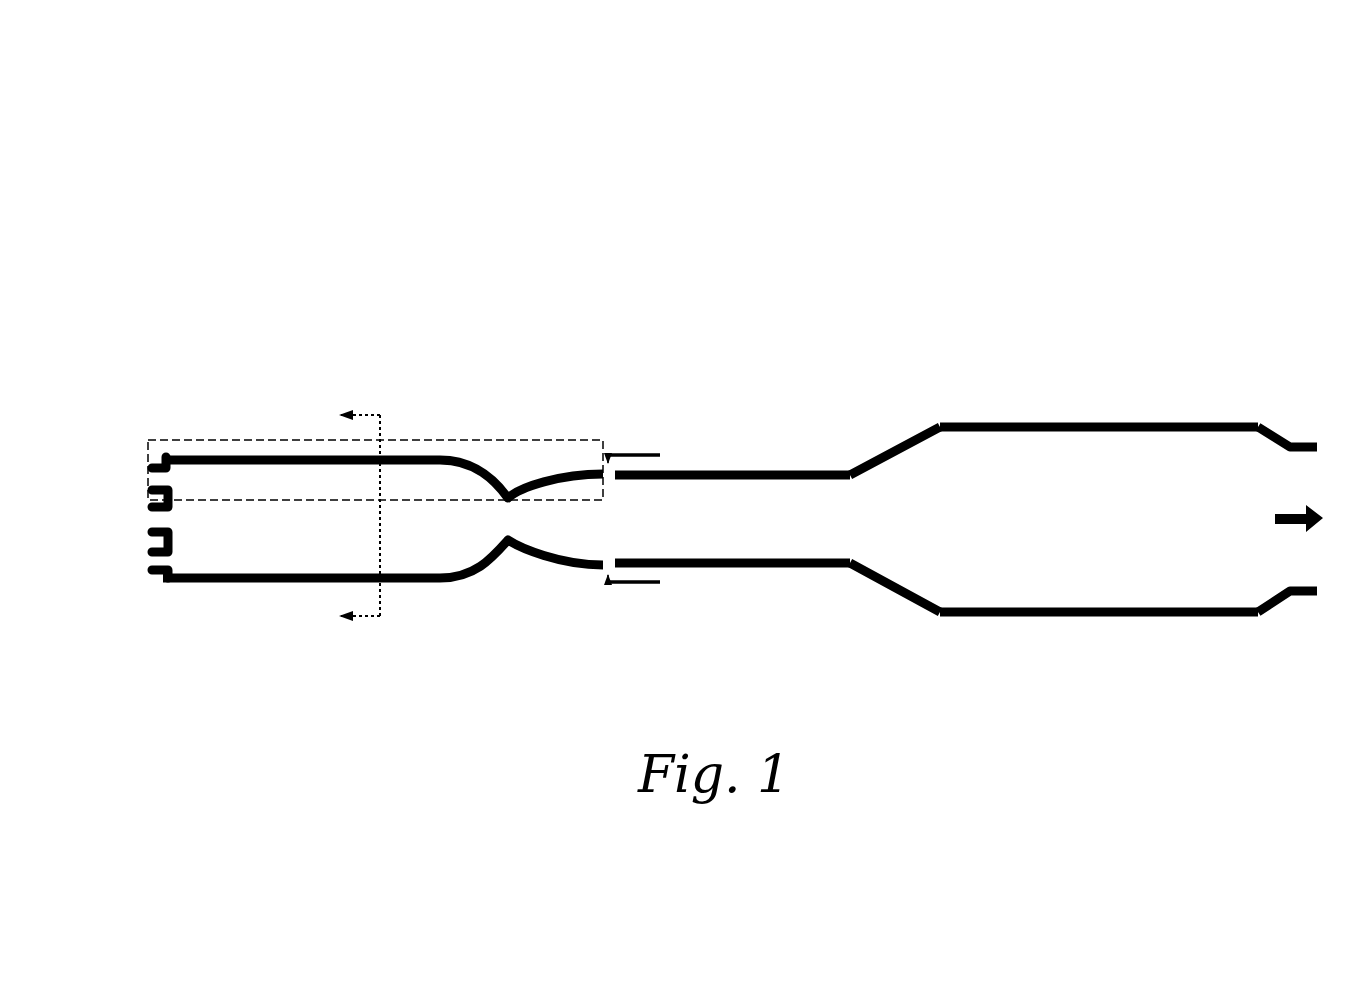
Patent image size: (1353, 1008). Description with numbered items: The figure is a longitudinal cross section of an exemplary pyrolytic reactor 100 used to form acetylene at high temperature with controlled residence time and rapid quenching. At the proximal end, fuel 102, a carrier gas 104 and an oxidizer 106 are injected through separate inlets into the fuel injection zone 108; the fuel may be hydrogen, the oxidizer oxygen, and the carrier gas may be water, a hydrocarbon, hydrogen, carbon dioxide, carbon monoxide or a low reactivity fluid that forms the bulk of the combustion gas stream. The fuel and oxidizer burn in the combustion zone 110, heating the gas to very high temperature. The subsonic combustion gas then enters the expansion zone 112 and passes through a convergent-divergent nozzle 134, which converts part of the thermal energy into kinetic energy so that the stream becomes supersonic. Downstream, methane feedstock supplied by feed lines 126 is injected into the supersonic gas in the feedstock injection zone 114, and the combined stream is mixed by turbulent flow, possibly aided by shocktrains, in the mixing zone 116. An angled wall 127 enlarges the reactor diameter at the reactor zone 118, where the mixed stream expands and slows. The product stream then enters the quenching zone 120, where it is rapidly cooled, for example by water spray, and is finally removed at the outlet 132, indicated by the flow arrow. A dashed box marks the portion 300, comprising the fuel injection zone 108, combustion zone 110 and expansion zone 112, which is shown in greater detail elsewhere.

The pyrolytic reactor 100 is at (1236, 183).
The fuel 102 is at (157, 478).
The carrier gas 104 is at (157, 520).
The oxidizer 106 is at (157, 560).
The fuel injection zone 108 is at (157, 385).
The combustion zone 110 is at (283, 385).
The expansion zone 112 is at (405, 385).
The feedstock injection zone 114 is at (552, 385).
The mixing zone 116 is at (676, 385).
The reactor zone 118 is at (855, 385).
The quenching zone 120 is at (1143, 385).
The feed lines 126 is at (658, 612).
The angled wall 127 is at (870, 589).
The product stream removal 132 is at (1299, 526).
The convergent-divergent nozzle 134 is at (496, 572).
The portion 300 is at (277, 509).